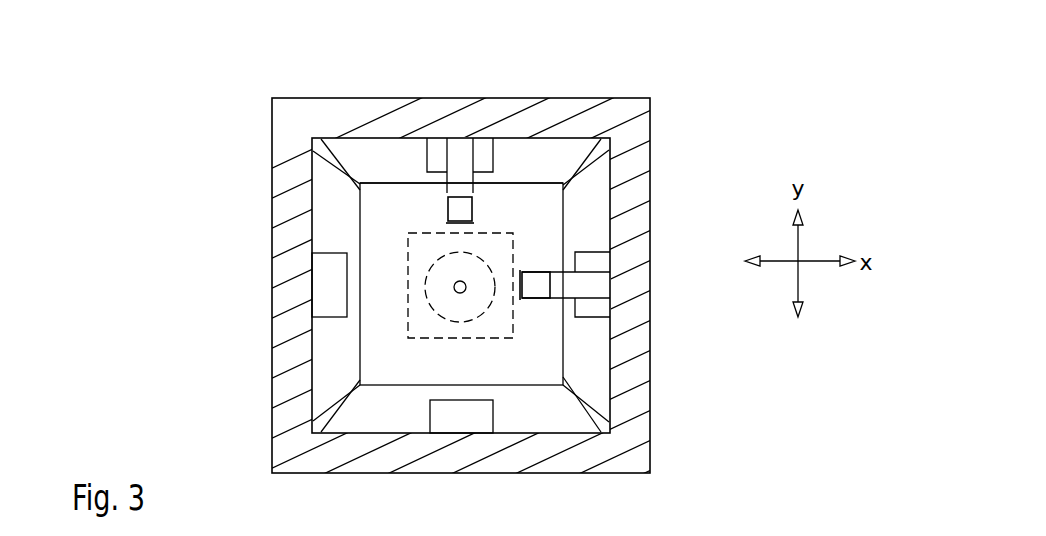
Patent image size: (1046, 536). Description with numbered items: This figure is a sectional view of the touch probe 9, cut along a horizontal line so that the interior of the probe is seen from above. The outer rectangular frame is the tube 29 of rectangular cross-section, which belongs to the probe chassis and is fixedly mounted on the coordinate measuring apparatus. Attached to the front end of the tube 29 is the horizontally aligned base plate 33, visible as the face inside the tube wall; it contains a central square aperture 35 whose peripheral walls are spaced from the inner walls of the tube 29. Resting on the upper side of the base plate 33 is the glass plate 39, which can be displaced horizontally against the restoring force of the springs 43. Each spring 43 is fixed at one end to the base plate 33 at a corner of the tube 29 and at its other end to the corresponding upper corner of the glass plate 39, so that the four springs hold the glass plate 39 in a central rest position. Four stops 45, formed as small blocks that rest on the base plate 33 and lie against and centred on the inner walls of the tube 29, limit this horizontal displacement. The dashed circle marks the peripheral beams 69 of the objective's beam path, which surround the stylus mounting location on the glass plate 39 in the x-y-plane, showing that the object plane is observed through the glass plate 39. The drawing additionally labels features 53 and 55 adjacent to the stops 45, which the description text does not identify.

The touch probe 9 is at (727, 112).
The tube 29 is at (583, 98).
The base plate 33 is at (364, 170).
The central square aperture 35 is at (410, 308).
The glass plate 39 is at (502, 216).
The springs 43 is at (317, 166).
The stops 45 is at (490, 170).
The recesses 53 is at (441, 168).
The spacers 55 is at (448, 195).
The peripheral beams 69 is at (478, 313).